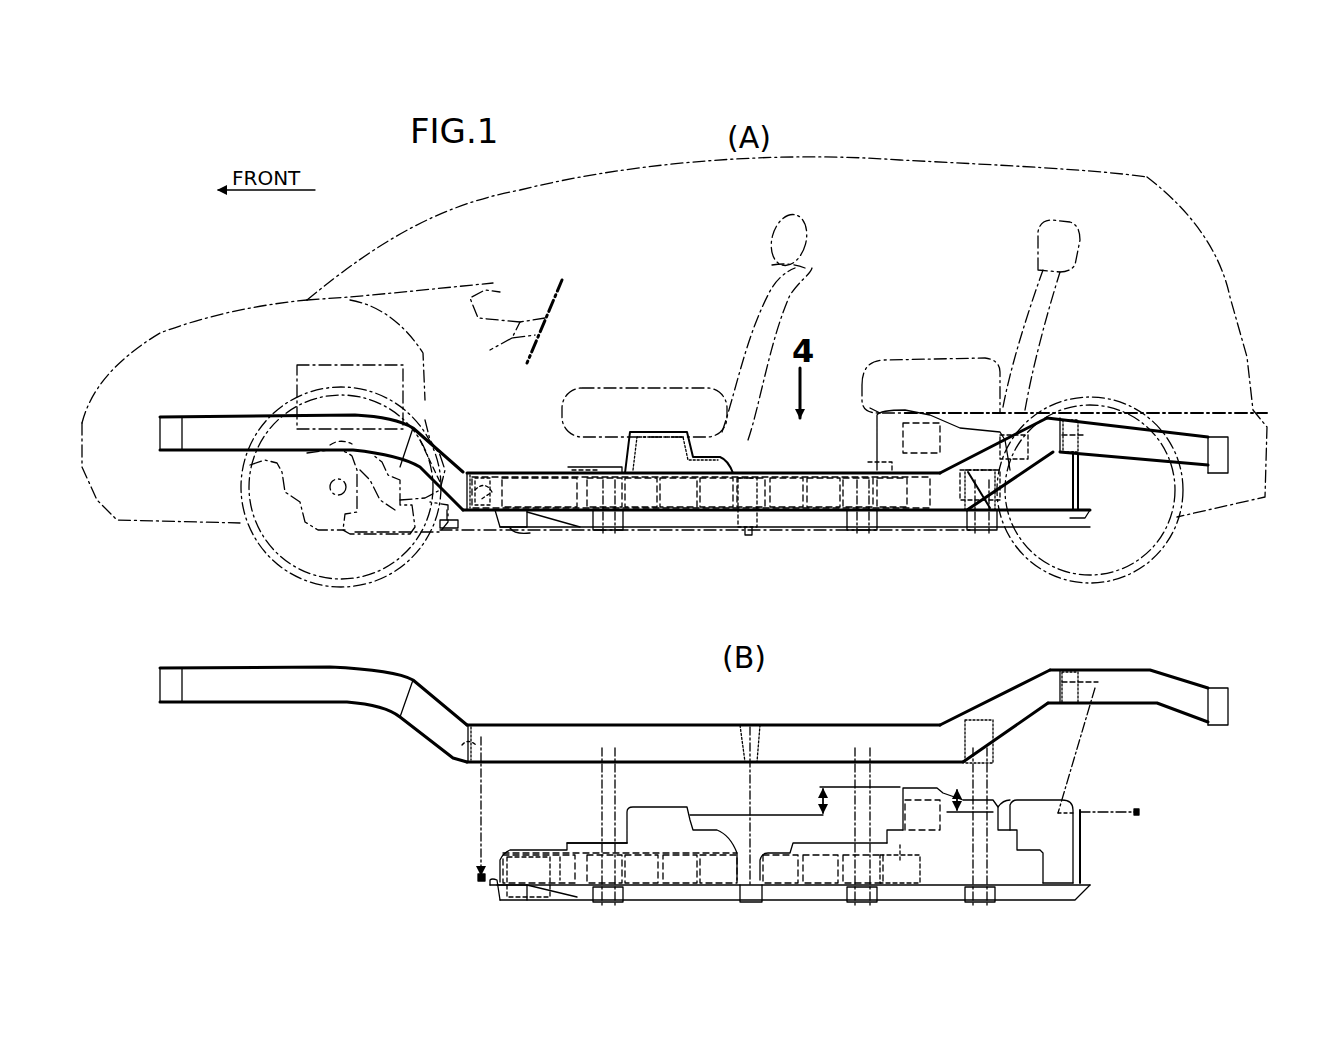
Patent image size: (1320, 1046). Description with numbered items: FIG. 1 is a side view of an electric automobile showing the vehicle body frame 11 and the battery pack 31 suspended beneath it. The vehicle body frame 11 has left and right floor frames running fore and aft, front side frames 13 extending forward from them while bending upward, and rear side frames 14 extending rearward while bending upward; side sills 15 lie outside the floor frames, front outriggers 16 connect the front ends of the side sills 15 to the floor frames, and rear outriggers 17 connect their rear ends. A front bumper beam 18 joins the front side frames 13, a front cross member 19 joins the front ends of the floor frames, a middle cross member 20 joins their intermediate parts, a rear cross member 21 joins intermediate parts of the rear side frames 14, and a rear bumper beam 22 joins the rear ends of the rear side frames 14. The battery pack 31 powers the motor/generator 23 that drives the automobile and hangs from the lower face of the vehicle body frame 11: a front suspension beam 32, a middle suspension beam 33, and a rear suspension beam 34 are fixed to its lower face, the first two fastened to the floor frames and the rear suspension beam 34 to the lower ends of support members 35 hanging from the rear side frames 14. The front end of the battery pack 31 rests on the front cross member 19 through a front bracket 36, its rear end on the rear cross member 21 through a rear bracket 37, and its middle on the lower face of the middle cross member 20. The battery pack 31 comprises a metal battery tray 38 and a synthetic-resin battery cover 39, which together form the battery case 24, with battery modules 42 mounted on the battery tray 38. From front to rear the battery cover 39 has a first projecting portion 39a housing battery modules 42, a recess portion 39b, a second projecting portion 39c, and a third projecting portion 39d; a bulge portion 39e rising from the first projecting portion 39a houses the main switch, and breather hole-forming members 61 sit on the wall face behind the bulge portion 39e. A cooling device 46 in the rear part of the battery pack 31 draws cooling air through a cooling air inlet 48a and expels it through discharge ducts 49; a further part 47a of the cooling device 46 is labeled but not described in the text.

The vehicle body frame 11 is at (558, 468).
The front side frame 13 is at (240, 417).
The rear side frame 14 is at (1115, 430).
The side sill 15 is at (713, 490).
The front outrigger 16 is at (447, 462).
The rear outrigger 17 is at (1002, 462).
The front bumper beam 18 is at (170, 440).
The front cross member 19 is at (447, 520).
The middle cross member 20 is at (720, 517).
The rear cross member 21 is at (1073, 425).
The rear bumper beam 22 is at (1222, 465).
The motor/generator 23 is at (343, 428).
The battery case 24 is at (692, 362).
The battery pack 31 is at (818, 532).
The front suspension beam 32 is at (608, 530).
The middle suspension beam 33 is at (868, 527).
The rear suspension beam 34 is at (985, 532).
The support member 35 is at (998, 503).
The front bracket 36 is at (497, 472).
The rear bracket 37 is at (1083, 468).
The battery tray 38 is at (683, 502).
The battery cover 39 is at (610, 462).
The first projecting portion 39a is at (592, 850).
The recess portion 39b is at (760, 862).
The second projecting portion 39c is at (855, 843).
The third projecting portion 39d is at (922, 790).
The bulge portion 39e is at (640, 808).
The battery module 42 is at (892, 478).
The cooling device 46 is at (1075, 798).
The connector 47a is at (1082, 817).
The cooling air inlet 48a is at (1005, 808).
The discharge duct 49 is at (1055, 885).
The breather hole-forming member 61 is at (690, 820).